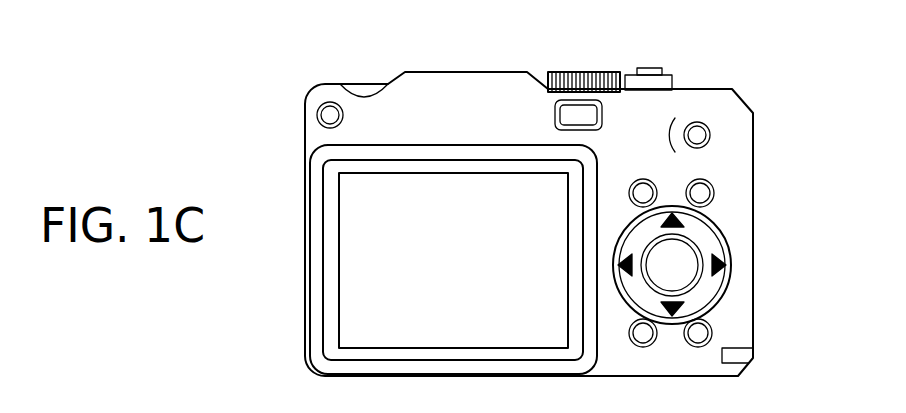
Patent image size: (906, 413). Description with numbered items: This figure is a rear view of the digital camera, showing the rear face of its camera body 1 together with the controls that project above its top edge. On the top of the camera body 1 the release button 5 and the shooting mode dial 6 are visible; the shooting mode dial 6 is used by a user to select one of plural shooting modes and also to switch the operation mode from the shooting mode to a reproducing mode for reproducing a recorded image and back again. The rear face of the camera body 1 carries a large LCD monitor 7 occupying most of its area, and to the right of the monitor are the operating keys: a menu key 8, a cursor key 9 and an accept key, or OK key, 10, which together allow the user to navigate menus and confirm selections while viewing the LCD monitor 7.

The camera body 1 is at (753, 165).
The release button 5 is at (648, 68).
The shooting mode dial 6 is at (588, 72).
The LCD monitor 7 is at (445, 337).
The menu key 8 is at (643, 347).
The cursor key 9 is at (672, 311).
The accept key (OK key) 10 is at (688, 252).